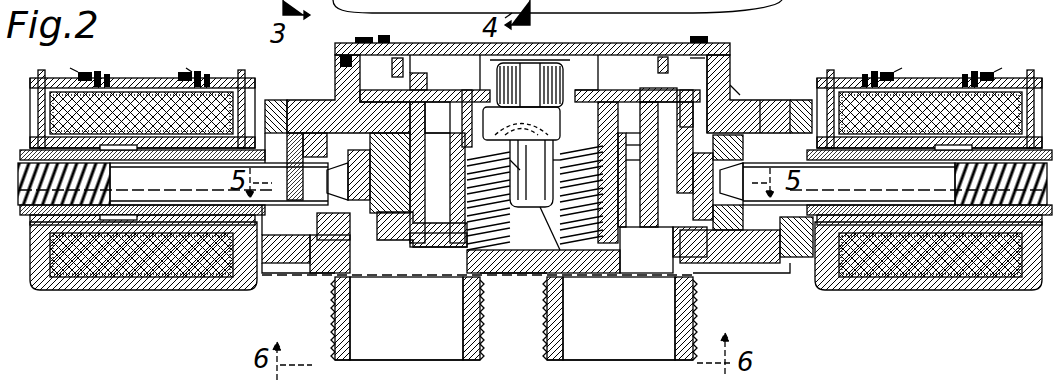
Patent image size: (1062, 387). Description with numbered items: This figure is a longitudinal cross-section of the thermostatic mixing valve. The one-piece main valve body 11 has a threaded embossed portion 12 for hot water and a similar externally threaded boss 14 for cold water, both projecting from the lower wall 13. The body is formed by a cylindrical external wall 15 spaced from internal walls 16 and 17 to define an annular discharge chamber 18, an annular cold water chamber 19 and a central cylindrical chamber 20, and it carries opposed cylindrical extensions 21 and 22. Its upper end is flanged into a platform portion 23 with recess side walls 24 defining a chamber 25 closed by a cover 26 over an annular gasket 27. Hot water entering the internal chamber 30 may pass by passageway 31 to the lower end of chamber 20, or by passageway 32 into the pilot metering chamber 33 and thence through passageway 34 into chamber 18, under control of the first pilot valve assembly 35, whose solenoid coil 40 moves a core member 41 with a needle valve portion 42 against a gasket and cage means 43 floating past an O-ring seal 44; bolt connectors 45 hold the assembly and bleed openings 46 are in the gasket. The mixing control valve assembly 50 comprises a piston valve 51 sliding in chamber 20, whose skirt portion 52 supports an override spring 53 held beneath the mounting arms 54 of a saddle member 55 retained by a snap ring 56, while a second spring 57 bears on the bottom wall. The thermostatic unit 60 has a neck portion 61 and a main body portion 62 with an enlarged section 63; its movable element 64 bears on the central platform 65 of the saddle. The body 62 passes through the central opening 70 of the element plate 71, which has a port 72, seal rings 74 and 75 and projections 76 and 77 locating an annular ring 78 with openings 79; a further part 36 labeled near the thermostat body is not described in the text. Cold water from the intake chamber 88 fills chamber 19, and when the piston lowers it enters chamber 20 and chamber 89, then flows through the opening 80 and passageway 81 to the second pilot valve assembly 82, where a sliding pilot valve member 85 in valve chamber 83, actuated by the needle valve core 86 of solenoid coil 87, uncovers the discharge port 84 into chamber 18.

The main valve body 11 is at (759, 88).
The threaded embossed portion 12 is at (334, 326).
The lower wall 13 is at (490, 278).
The externally threaded boss 14 is at (694, 311).
The cylindrical external wall 15 is at (735, 98).
The internal wall 16 is at (633, 128).
The internal wall 17 is at (630, 147).
The annular discharge chamber 18 is at (408, 172).
The annular cold water chamber 19 is at (434, 145).
The central cylindrical chamber 20 is at (590, 110).
The cylindrical extension 21 is at (300, 100).
The cylindrical extension 22 is at (752, 265).
The platform portion 23 is at (338, 57).
The side walls 24 is at (350, 78).
The cylindrical chamber 25 is at (708, 66).
The cover 26 is at (340, 48).
The annular gasket 27 is at (352, 41).
The internal chamber 30 is at (410, 337).
The passageway means 31 is at (477, 287).
The passageway means 32 is at (372, 215).
The pilot metering chamber 33 is at (318, 186).
The passageway chamber 34 is at (420, 117).
The first solenoid operated pilot control valve assembly 35 is at (155, 68).
The valve cylinder 36 is at (541, 85).
The solenoid coil 40 is at (122, 262).
The core member 41 is at (173, 184).
The needle valve portion 42 is at (326, 180).
The resilient gasket and cage means 43 is at (429, 190).
The annular O-ring seal 44 is at (315, 270).
The bolt connectors 45 is at (266, 275).
The bleed openings 46 is at (290, 262).
The mixing control valve assembly 50 is at (604, 78).
The piston valve 51 is at (425, 88).
The skirt portion 52 is at (448, 245).
The override spring member 53 is at (615, 220).
The mounting arms 54 is at (612, 113).
The saddle member 55 is at (535, 198).
The snap ring member 56 is at (630, 167).
The second spring 57 is at (560, 250).
The thermostatic unit 60 is at (524, 64).
The neck portion 61 is at (531, 173).
The main body portion 62 is at (515, 11).
The enlarged section 63 is at (546, 128).
The movable element 64 is at (553, 165).
The central platform portion 65 is at (515, 170).
The central opening 70 is at (530, 85).
The element plate 71 is at (630, 86).
The port means 72 is at (485, 90).
The annular seal ring 74 is at (658, 87).
The annular seal ring 75 is at (686, 102).
The annular projection 76 is at (424, 85).
The annular projection 77 is at (392, 72).
The annular ring member 78 is at (663, 58).
The openings 79 is at (412, 72).
The port or opening 80 is at (725, 72).
The passageway means 81 is at (762, 104).
The second pilot valve assembly 82 is at (908, 58).
The valve chamber 83 is at (730, 235).
The discharge port 84 is at (697, 225).
The sliding pilot valve member 85 is at (668, 230).
The needle valve core member 86 is at (895, 184).
The solenoid coil 87 is at (912, 112).
The intake chamber 88 is at (658, 347).
The chamber 89 is at (578, 75).